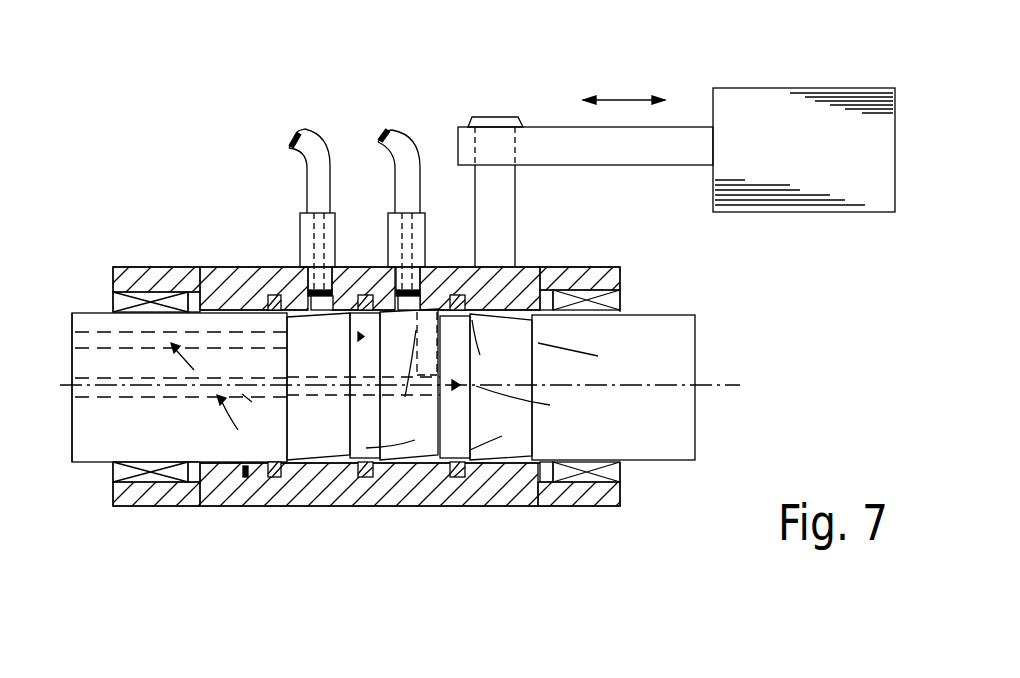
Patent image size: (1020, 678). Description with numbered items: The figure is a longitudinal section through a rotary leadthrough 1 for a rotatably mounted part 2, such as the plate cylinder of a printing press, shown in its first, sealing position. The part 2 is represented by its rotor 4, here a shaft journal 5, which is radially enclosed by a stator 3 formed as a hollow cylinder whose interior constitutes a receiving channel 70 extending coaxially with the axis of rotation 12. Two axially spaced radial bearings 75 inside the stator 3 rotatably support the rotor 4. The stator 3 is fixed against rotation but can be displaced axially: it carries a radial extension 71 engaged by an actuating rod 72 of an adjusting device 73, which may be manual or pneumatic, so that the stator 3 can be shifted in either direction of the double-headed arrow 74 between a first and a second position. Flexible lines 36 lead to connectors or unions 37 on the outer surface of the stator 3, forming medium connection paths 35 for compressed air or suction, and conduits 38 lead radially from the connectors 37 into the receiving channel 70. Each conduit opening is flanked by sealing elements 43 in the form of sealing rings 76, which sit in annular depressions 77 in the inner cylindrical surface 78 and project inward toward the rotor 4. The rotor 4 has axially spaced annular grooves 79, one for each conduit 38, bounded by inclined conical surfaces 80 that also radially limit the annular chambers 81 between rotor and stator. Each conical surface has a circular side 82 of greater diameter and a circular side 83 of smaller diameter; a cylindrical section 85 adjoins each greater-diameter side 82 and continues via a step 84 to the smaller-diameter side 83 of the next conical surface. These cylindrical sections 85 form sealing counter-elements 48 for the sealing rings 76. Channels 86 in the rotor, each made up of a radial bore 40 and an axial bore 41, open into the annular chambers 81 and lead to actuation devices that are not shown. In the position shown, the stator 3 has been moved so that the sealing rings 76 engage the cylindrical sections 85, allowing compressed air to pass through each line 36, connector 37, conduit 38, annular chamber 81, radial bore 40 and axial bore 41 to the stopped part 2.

The rotary leadthrough 1 is at (170, 114).
The rotatably mounted part 2 is at (80, 428).
The stator 3 is at (487, 492).
The rotor 4 is at (110, 444).
The journal 5 is at (117, 355).
The axis of rotation 12 is at (698, 392).
The medium connection path 35 is at (290, 242).
The flexible line 36 is at (396, 152).
The connector 37 is at (393, 226).
The conduit 38 is at (346, 270).
The radial bore 40 is at (338, 320).
The axial bore 41 is at (262, 405).
The sealing element 43 is at (283, 470).
The sealing counter-element 48 is at (290, 313).
The receiving channel 70 is at (243, 481).
The radial extension 71 is at (516, 190).
The actuating rod 72 is at (636, 148).
The adjusting device 73 is at (868, 186).
The double-headed arrow 74 is at (622, 99).
The radial bearing 75 is at (153, 484).
The sealing ring 76 is at (262, 292).
The annular depression 77 is at (270, 478).
The inner cylindrical surface 78 is at (535, 492).
The annular groove 79 is at (305, 496).
The conical surface 80 is at (304, 454).
The annular chamber 81 is at (278, 256).
The circular side of greater diameter 82 is at (529, 403).
The circular side of smaller diameter 83 is at (552, 350).
The step 84 is at (355, 478).
The cylindrical section 85 is at (449, 430).
The conduit 86 is at (219, 399).